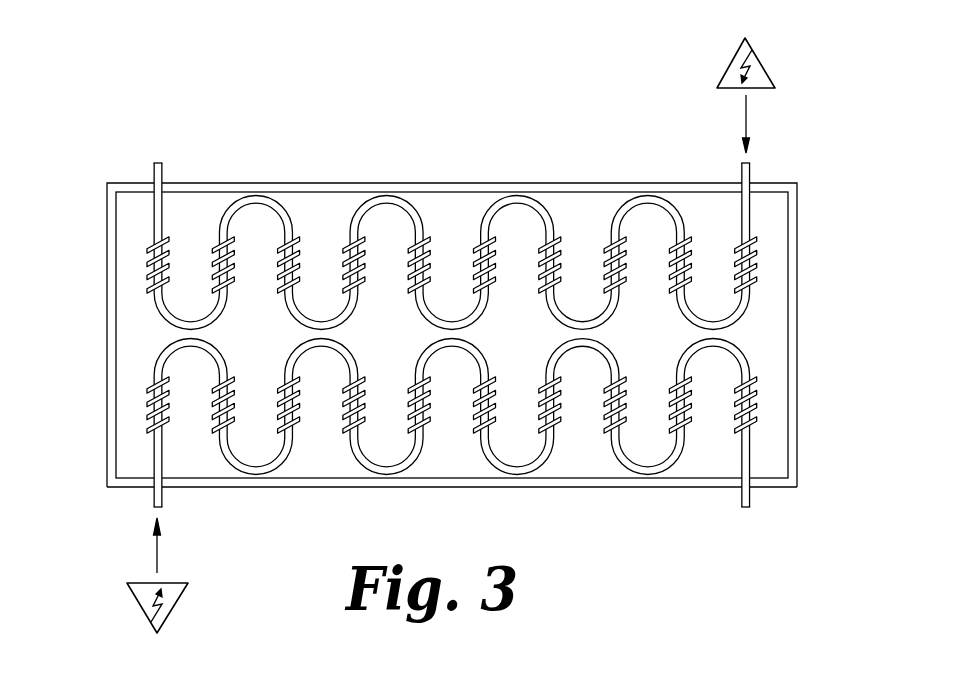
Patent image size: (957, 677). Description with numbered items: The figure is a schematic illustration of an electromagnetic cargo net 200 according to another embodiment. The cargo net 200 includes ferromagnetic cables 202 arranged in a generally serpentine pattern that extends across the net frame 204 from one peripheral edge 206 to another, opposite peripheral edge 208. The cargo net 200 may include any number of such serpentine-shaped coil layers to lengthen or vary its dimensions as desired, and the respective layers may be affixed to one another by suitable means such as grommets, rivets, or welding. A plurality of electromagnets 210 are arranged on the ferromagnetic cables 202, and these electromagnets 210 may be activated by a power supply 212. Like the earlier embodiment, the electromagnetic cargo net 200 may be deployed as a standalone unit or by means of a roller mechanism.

The electromagnetic cargo net 200 is at (92, 92).
The ferromagnetic cables 202 is at (748, 216).
The net frame 204 is at (293, 482).
The peripheral edge 206 is at (795, 315).
The opposite peripheral edge 208 is at (108, 365).
The electromagnets 210 is at (147, 282).
The power supply 212 is at (767, 62).